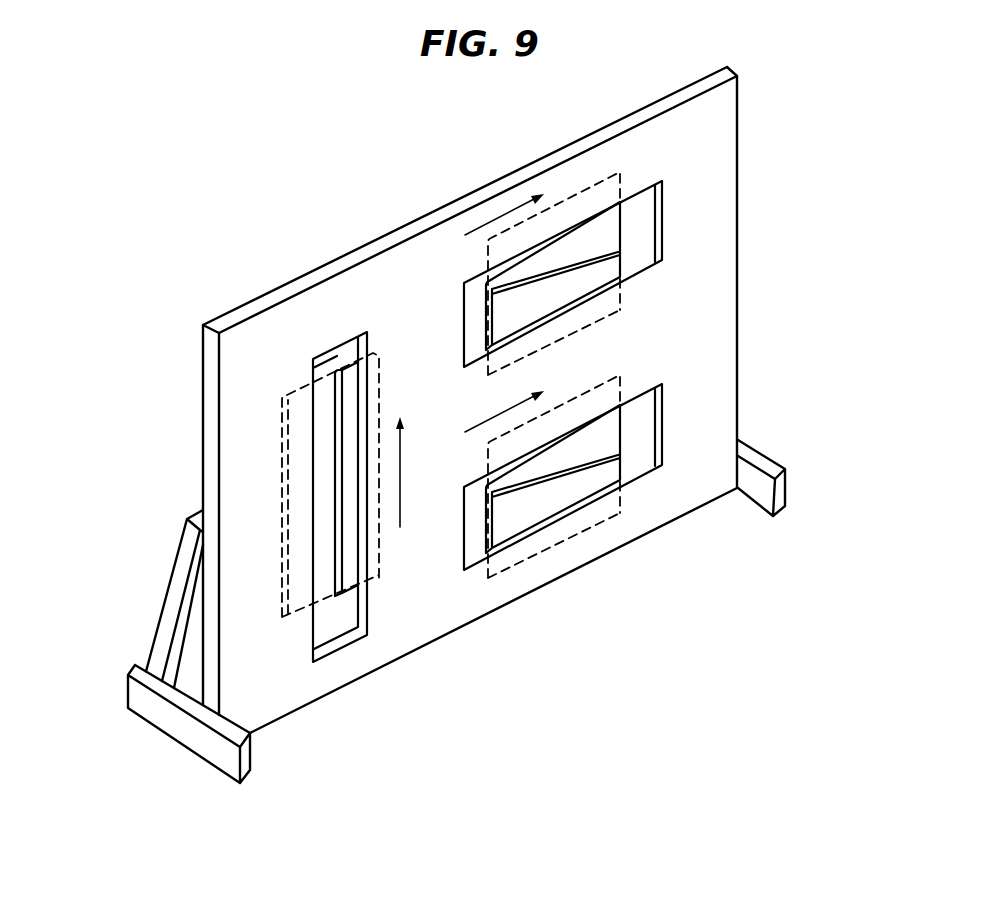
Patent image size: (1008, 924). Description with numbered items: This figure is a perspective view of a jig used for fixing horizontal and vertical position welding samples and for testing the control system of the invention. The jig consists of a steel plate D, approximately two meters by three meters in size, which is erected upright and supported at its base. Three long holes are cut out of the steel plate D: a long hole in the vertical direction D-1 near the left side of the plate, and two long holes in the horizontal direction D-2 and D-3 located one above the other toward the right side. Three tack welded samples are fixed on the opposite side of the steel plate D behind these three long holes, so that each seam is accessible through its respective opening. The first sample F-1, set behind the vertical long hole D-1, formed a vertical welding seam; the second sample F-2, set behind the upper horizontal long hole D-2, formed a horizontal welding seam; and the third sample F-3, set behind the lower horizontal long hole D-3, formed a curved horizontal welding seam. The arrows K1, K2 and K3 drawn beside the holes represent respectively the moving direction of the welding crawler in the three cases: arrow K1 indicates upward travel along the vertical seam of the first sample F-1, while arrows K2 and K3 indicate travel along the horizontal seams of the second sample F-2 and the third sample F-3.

The steel plate D is at (258, 357).
The long hole in vertical direction D-1 is at (365, 338).
The long hole in horizontal direction D-2 is at (663, 198).
The long hole in horizontal direction D-3 is at (663, 399).
The first sample F-1 is at (347, 365).
The second sample F-2 is at (603, 270).
The third sample F-3 is at (603, 468).
The arrow K1 is at (402, 455).
The arrow K2 is at (521, 199).
The arrow K3 is at (521, 397).